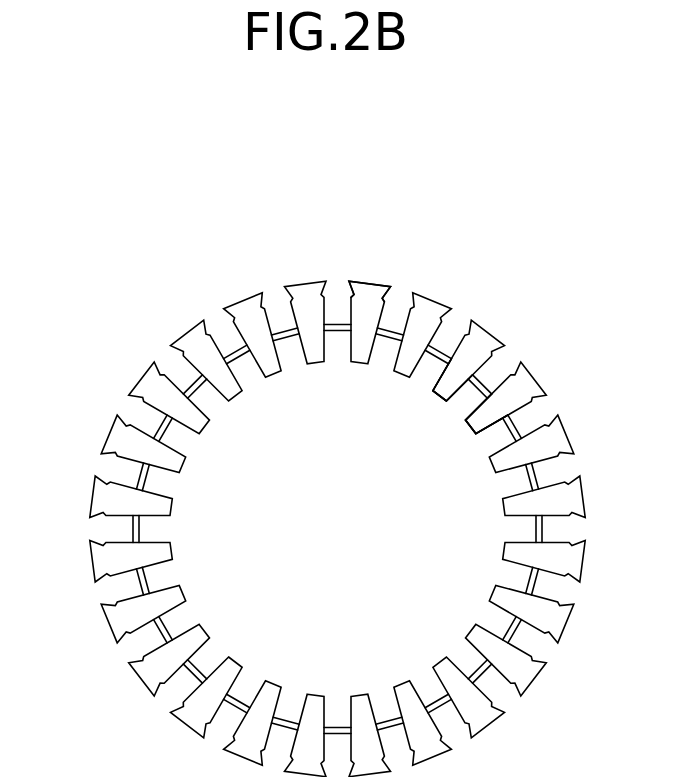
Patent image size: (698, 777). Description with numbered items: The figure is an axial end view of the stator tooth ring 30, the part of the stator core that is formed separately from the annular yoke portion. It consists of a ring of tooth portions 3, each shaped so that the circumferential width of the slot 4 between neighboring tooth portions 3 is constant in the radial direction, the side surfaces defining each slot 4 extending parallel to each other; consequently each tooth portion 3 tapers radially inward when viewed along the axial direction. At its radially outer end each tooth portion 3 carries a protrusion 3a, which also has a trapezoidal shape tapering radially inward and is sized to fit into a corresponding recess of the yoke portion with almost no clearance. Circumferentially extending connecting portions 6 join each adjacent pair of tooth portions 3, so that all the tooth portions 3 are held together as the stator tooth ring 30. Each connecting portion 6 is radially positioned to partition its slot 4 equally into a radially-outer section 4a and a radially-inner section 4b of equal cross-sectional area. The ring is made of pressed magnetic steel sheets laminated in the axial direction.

The stator tooth ring 30 is at (505, 320).
The tooth portion 3 is at (358, 323).
The protrusion 3a is at (369, 289).
The connecting portion 6 is at (288, 332).
The slot 4 is at (629, 310).
The radially-outer section 4a is at (490, 378).
The radially-inner section 4b is at (467, 403).